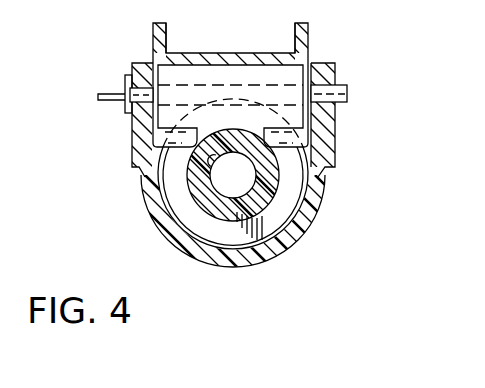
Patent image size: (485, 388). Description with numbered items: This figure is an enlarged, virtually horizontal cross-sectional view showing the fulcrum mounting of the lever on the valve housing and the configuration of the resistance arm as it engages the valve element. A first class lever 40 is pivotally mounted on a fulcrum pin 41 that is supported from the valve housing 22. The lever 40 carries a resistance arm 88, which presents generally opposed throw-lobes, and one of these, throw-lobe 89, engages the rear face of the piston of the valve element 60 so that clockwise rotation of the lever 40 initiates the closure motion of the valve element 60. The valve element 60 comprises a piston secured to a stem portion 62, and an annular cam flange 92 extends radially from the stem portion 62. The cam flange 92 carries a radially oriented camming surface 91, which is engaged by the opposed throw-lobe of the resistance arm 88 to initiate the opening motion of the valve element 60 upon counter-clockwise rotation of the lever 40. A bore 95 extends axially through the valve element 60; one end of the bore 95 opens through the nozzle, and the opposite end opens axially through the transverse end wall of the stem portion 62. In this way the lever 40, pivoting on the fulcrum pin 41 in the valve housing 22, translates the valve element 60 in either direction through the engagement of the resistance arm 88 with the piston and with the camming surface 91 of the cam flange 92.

The first class lever 40 is at (307, 33).
The fulcrum pin 41 is at (347, 91).
The resistance arm 88 is at (132, 124).
The throw-lobe 89 is at (305, 142).
The bore 95 is at (190, 176).
The valve element 60 is at (307, 182).
The valve housing 22 is at (321, 218).
The camming surface 91 is at (182, 207).
The stem portion 62 is at (222, 210).
The annular cam flange 92 is at (284, 240).